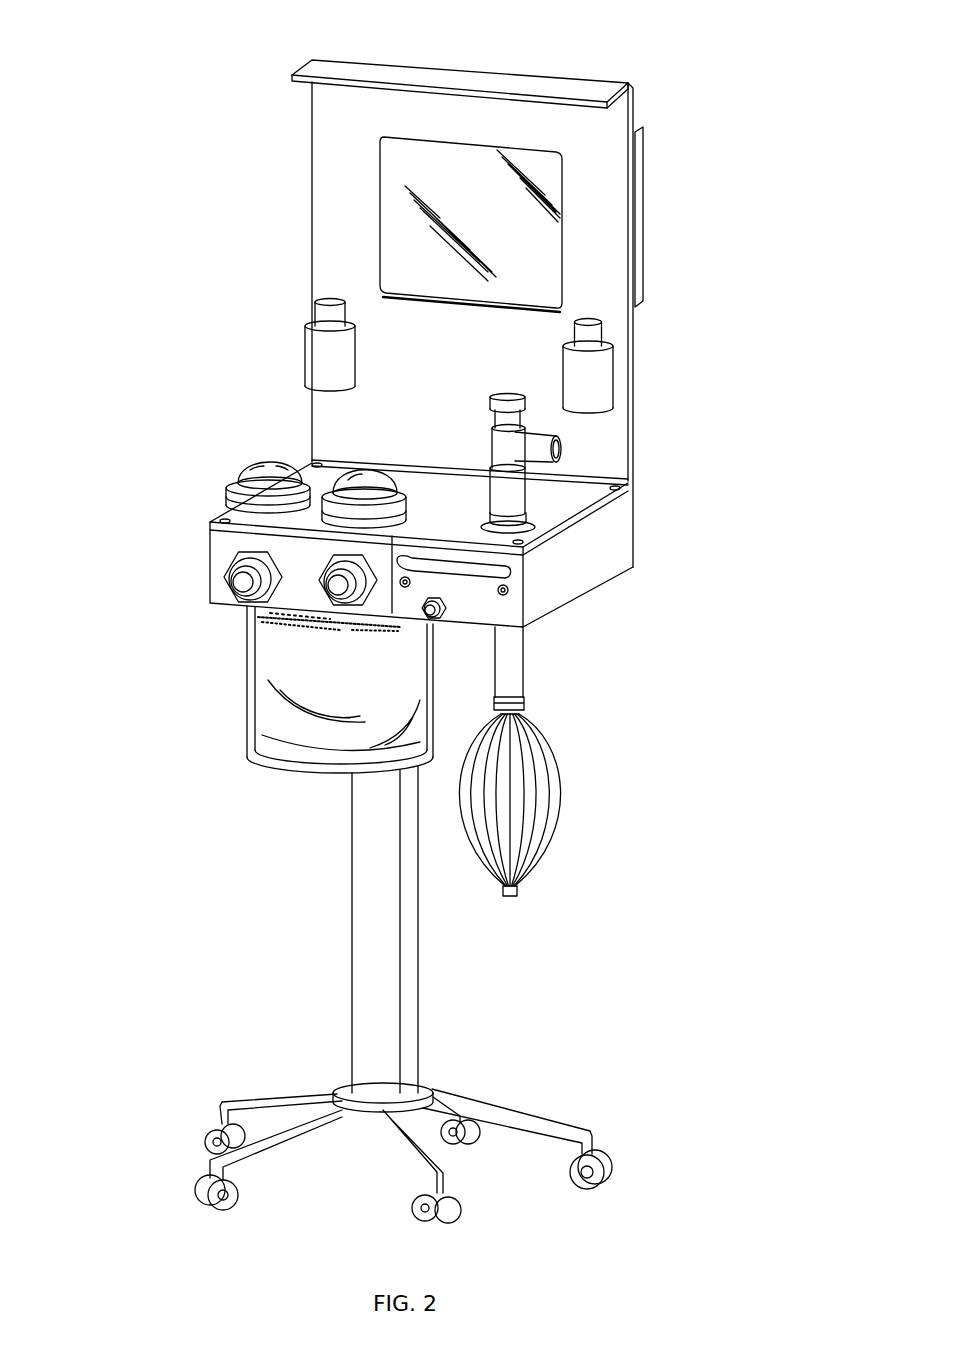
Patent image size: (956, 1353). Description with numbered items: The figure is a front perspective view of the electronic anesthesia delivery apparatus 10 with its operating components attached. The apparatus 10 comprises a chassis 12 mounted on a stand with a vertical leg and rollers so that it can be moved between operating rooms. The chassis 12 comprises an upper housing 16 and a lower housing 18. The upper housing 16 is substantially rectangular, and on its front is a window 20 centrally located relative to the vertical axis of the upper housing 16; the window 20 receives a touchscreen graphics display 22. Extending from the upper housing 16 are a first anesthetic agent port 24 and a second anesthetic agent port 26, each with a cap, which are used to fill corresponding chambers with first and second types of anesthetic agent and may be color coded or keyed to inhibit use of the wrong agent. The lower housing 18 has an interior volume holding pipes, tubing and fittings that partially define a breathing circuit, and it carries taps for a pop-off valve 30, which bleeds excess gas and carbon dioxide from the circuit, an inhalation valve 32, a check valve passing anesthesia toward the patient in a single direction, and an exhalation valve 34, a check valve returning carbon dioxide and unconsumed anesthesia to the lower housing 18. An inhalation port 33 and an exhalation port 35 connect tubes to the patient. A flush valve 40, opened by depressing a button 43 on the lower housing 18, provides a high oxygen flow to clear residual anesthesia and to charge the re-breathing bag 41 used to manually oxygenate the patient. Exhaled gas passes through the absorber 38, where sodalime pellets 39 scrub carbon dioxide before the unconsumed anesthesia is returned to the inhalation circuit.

The electronic anesthesia delivery apparatus 10 is at (185, 114).
The chassis 12 is at (703, 93).
The upper housing 16 is at (335, 255).
The lower housing 18 is at (582, 562).
The window 20 is at (562, 282).
The touchscreen graphics display 22 is at (538, 242).
The first anesthetic agent port 24 is at (303, 355).
The second anesthetic agent port 26 is at (618, 366).
The pop-off valve 30 is at (559, 497).
The inhalation valve 32 is at (242, 469).
The inhalation port 33 is at (235, 590).
The exhalation valve 34 is at (340, 466).
The exhalation port 35 is at (325, 568).
The absorber 38 is at (232, 745).
The pellets 39 is at (268, 638).
The flush valve 40 is at (478, 622).
The re-breathing bag 41 is at (567, 783).
The button 43 is at (446, 612).